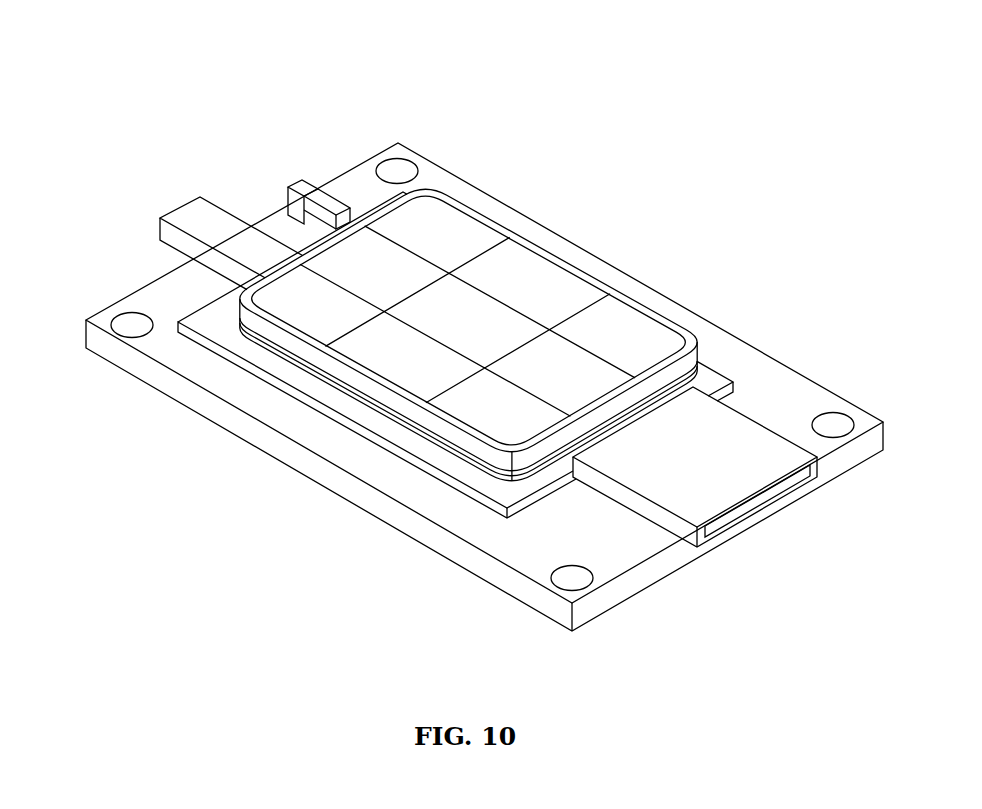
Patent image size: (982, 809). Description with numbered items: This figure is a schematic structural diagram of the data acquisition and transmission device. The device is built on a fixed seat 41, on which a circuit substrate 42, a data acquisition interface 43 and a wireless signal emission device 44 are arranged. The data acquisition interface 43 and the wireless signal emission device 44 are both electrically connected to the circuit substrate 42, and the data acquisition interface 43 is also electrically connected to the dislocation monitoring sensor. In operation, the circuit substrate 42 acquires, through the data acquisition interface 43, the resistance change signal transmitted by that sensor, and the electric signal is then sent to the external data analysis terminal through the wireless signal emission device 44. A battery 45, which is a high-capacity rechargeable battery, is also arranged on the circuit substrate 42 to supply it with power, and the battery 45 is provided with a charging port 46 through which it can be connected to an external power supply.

The fixed seat 41 is at (723, 348).
The circuit substrate 42 is at (347, 414).
The data acquisition interface 43 is at (723, 463).
The wireless signal emission device 44 is at (330, 215).
The battery 45 is at (500, 400).
The charging port 46 is at (198, 228).